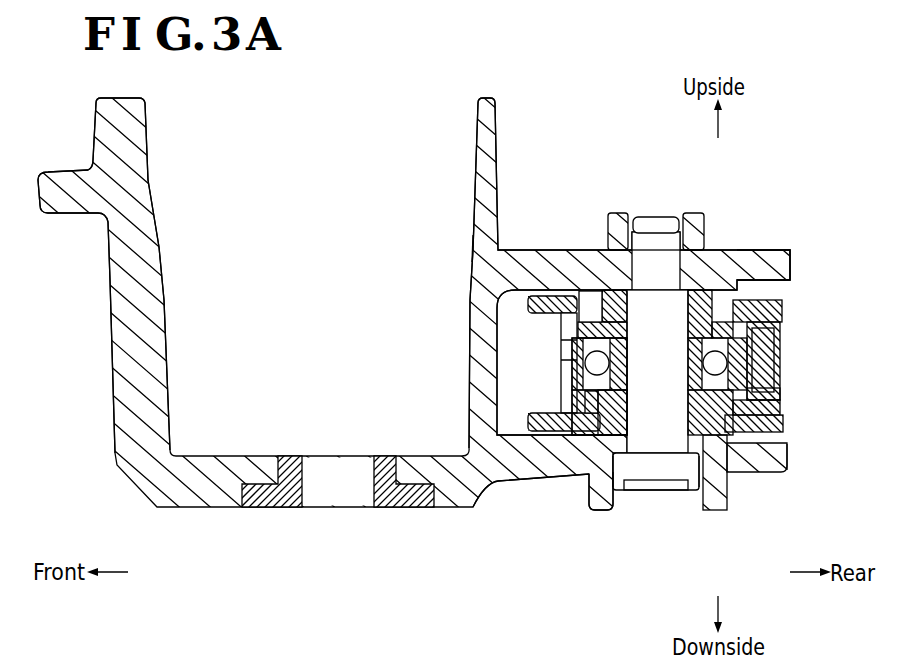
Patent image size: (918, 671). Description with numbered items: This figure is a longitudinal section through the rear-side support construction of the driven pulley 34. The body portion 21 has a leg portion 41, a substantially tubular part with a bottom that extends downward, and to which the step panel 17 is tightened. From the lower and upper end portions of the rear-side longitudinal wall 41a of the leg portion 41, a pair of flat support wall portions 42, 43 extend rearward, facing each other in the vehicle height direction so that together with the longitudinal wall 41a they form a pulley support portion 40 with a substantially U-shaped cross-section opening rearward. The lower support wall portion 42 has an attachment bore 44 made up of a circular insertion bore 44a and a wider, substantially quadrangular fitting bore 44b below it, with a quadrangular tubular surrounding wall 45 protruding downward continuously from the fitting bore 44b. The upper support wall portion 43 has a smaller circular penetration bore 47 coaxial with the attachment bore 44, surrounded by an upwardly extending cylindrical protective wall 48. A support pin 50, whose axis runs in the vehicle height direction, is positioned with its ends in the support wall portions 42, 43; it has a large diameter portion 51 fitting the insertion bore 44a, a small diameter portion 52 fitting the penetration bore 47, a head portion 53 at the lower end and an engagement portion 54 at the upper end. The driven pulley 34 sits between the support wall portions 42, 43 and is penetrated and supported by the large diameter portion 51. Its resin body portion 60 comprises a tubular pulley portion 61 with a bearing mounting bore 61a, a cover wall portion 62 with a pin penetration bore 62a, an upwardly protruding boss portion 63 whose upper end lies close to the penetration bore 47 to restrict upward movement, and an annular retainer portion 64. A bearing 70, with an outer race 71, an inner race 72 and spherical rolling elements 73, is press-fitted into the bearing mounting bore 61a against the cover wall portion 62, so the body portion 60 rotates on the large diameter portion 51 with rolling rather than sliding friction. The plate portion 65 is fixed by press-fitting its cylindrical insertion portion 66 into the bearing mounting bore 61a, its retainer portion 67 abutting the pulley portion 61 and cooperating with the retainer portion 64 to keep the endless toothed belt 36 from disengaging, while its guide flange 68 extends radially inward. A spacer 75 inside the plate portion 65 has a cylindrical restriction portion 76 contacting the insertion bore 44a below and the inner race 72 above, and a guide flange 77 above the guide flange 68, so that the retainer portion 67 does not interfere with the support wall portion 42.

The step panel 17 is at (440, 523).
The body portion 21 is at (484, 498).
The driven pulley 34 is at (412, 378).
The endless toothed belt 36 is at (782, 356).
The pulley support portion 40 is at (544, 250).
The leg portion 41 is at (166, 284).
The rear-side longitudinal wall 41a is at (472, 245).
The support wall portion 42 is at (771, 472).
The support wall portion 43 is at (762, 250).
The attachment bore 44 is at (720, 558).
The insertion bore 44a is at (640, 492).
The fitting bore 44b is at (682, 492).
The surrounding wall 45 is at (594, 500).
The penetration bore 47 is at (648, 224).
The protective wall 48 is at (618, 214).
The support pin 50 is at (588, 470).
The large diameter portion 51 is at (700, 300).
The small diameter portion 52 is at (698, 246).
The head portion 53 is at (660, 487).
The engagement portion 54 is at (662, 218).
The body portion 60 is at (571, 372).
The pulley portion 61 is at (562, 320).
The bearing mounting bore 61a is at (566, 350).
The cover wall portion 62 is at (606, 292).
The pin penetration bore 62a is at (590, 292).
The boss portion 63 is at (775, 312).
The retainer portion 64 is at (530, 300).
The plate portion 65 is at (574, 402).
The insertion portion 66 is at (781, 408).
The retainer portion 67 is at (785, 428).
The guide flange 68 is at (530, 426).
The bearing 70 is at (637, 413).
The outer race 71 is at (781, 334).
The inner race 72 is at (782, 386).
The rolling elements 73 is at (775, 363).
The spacer 75 is at (630, 407).
The restriction portion 76 is at (722, 478).
The guide flange 77 is at (789, 458).